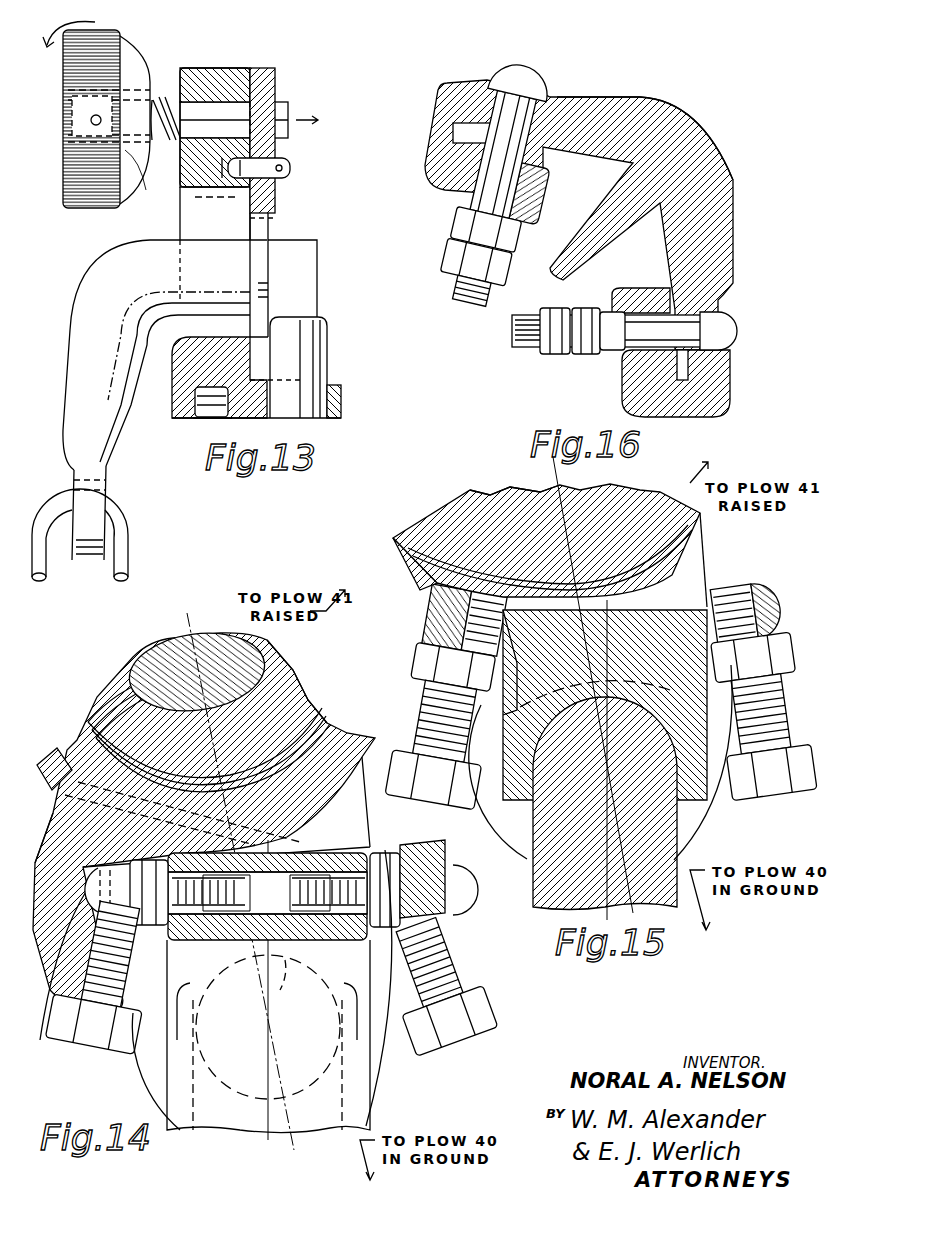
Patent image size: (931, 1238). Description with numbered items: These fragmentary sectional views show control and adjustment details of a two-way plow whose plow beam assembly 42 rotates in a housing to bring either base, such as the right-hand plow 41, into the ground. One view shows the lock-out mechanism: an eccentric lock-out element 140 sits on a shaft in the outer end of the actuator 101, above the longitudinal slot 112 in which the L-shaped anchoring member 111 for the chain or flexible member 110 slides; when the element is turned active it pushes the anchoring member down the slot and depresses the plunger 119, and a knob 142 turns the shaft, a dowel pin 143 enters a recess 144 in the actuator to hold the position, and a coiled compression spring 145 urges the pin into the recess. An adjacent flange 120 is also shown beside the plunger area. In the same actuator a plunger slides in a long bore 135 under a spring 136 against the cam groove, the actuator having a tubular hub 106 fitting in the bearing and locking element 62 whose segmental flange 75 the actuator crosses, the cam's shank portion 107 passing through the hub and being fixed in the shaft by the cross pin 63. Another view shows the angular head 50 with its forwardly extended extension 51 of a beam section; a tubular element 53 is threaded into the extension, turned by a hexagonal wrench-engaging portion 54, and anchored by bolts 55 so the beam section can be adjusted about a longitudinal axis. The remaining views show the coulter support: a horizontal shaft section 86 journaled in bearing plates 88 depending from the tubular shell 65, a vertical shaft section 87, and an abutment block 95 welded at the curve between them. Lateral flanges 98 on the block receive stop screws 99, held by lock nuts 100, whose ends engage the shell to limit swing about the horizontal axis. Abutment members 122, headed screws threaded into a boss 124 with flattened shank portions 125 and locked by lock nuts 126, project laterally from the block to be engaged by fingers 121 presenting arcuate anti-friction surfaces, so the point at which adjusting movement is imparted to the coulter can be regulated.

In FIG. 13, the right-hand plow 41 is at (292, 108).
In FIG. 16, the plow beam assembly 42 is at (724, 130).
In FIG. 16, the angular head 50 is at (735, 235).
In FIG. 16, the extension 51 is at (553, 192).
In FIG. 16, the tubular element 53 is at (663, 312).
In FIG. 16, the hexagonal wrench-engaging portion 54 is at (480, 235).
In FIG. 16, the bolts 55 is at (530, 85).
In FIG. 15, the bearing and locking element 62 is at (455, 512).
In FIG. 14, the bearing and locking element 62 is at (322, 724).
In FIG. 15, the cross pin 63 is at (556, 495).
In FIG. 14, the cross pin 63 is at (192, 640).
In FIG. 15, the tubular shell 65 is at (395, 538).
In FIG. 14, the tubular shell 65 is at (56, 752).
In FIG. 14, the segmental flange 75 is at (62, 825).
In FIG. 15, the horizontal shaft section 86 is at (663, 813).
In FIG. 14, the horizontal shaft section 86 is at (208, 1072).
In FIG. 15, the vertical shaft section 87 is at (548, 898).
In FIG. 14, the vertical shaft section 87 is at (178, 1135).
In FIG. 15, the bearing plates 88 is at (722, 800).
In FIG. 14, the bearing plates 88 is at (358, 800).
In FIG. 15, the abutment block 95 is at (648, 610).
In FIG. 15, the lateral flanges 98 is at (432, 604).
In FIG. 14, the lateral flanges 98 is at (430, 846).
In FIG. 15, the stop screws 99 is at (432, 690).
In FIG. 14, the stop screws 99 is at (95, 1050).
In FIG. 15, the lock nuts 100 is at (430, 654).
In FIG. 13, the actuator 101 is at (175, 395).
In FIG. 15, the tubular hub 106 is at (500, 490).
In FIG. 14, the tubular hub 106 is at (290, 675).
In FIG. 14, the shank portion 107 is at (155, 655).
In FIG. 13, the flexible member 110 is at (107, 507).
In FIG. 13, the L-shaped anchoring member 111 is at (108, 265).
In FIG. 13, the longitudinal slot 112 is at (188, 212).
In FIG. 13, the plunger 119 is at (330, 332).
In FIG. 13, the flange 120 is at (343, 397).
In FIG. 14, the fingers 121 is at (48, 1025).
In FIG. 14, the abutment members 122 is at (452, 918).
In FIG. 14, the boss 124 is at (297, 981).
In FIG. 14, the flattened shank portions 125 is at (442, 870).
In FIG. 14, the lock nuts 126 is at (150, 927).
In FIG. 13, the bore 135 is at (228, 418).
In FIG. 13, the spring 136 is at (205, 410).
In FIG. 13, the lock-out element 140 is at (278, 197).
In FIG. 13, the knob 142 is at (108, 27).
In FIG. 13, the dowel pin 143 is at (290, 168).
In FIG. 13, the recess 144 is at (227, 180).
In FIG. 13, the coiled compression spring 145 is at (153, 100).